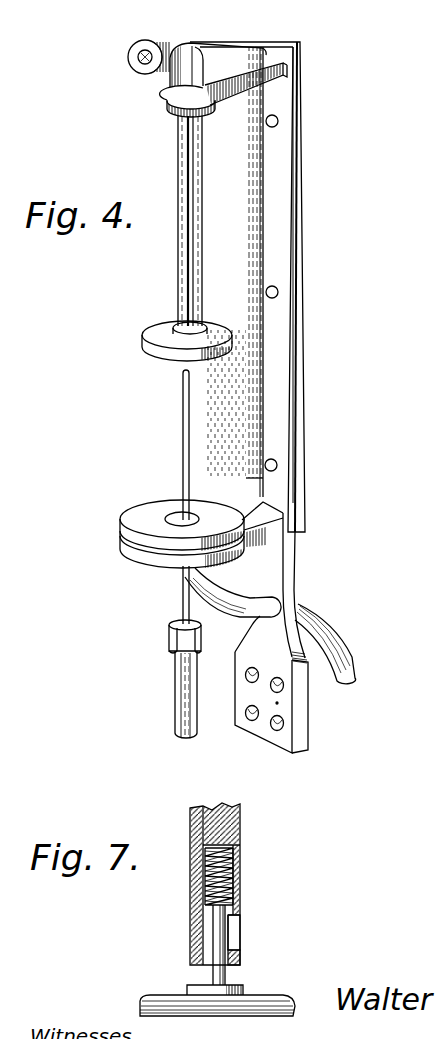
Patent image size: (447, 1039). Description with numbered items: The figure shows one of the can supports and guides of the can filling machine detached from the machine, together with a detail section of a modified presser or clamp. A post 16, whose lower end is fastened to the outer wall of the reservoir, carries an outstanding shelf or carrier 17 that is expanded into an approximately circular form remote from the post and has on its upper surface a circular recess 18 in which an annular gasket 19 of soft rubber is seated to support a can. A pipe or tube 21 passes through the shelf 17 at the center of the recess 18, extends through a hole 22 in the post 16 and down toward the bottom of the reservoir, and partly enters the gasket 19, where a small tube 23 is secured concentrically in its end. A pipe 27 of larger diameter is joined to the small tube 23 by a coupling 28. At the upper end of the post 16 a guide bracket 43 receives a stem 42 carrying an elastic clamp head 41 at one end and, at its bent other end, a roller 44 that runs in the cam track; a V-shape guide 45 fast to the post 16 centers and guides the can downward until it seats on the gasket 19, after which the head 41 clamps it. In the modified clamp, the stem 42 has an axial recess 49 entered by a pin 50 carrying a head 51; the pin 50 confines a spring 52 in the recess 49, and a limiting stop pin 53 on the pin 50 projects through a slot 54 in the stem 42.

In FIG. 4, the post 16 is at (290, 566).
In FIG. 4, the shelf or carrier 17 is at (143, 558).
In FIG. 4, the circular recess 18 is at (125, 543).
In FIG. 4, the annular gasket 19 is at (140, 512).
In FIG. 4, the pipe or tube 21 is at (352, 638).
In FIG. 4, the hole 22 is at (280, 598).
In FIG. 4, the small tube 23 is at (180, 606).
In FIG. 4, the pipe 27 is at (180, 712).
In FIG. 4, the coupling 28 is at (170, 650).
In FIG. 4, the plunger or clamp head 41 is at (152, 343).
In FIG. 4, the stem 42 is at (176, 278).
In FIG. 7, the stem 42 is at (240, 822).
In FIG. 4, the guide bracket 43 is at (226, 75).
In FIG. 4, the roller 44 is at (128, 57).
In FIG. 4, the V-shape guide 45 is at (305, 372).
In FIG. 7, the axial recess 49 is at (235, 852).
In FIG. 7, the pin 50 is at (210, 940).
In FIG. 7, the head 51 is at (155, 1003).
In FIG. 7, the spring 52 is at (203, 870).
In FIG. 7, the limiting stop pin 53 is at (240, 942).
In FIG. 7, the slot 54 is at (233, 925).